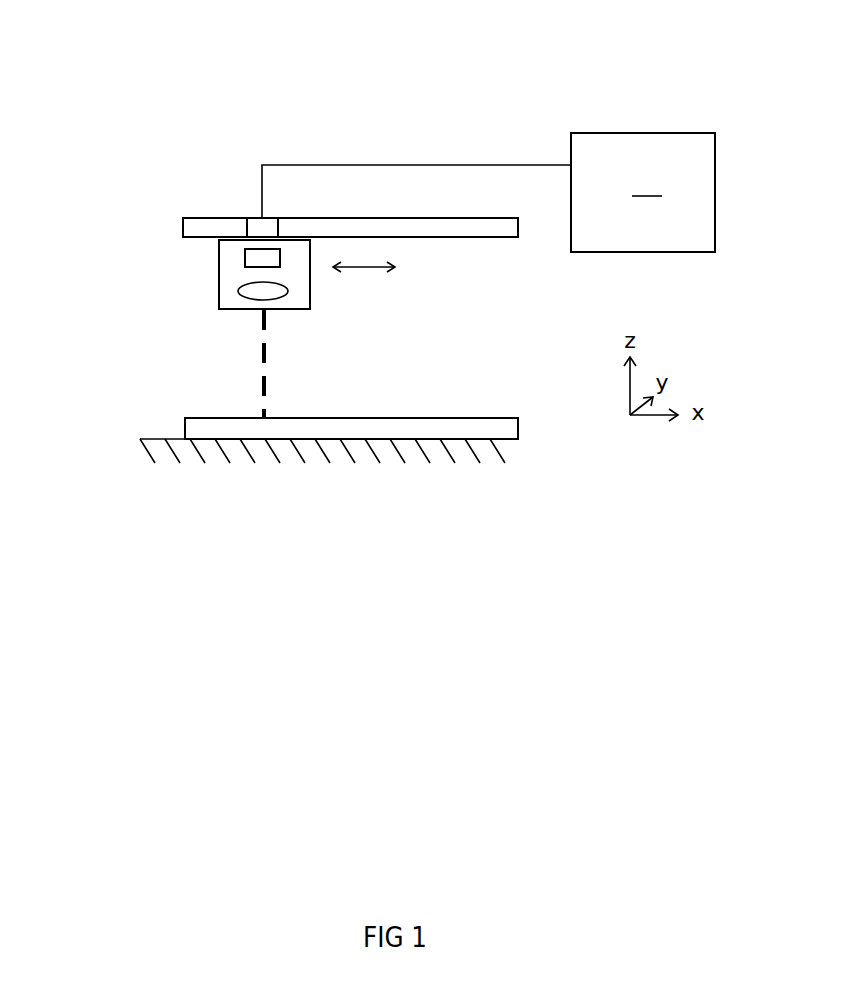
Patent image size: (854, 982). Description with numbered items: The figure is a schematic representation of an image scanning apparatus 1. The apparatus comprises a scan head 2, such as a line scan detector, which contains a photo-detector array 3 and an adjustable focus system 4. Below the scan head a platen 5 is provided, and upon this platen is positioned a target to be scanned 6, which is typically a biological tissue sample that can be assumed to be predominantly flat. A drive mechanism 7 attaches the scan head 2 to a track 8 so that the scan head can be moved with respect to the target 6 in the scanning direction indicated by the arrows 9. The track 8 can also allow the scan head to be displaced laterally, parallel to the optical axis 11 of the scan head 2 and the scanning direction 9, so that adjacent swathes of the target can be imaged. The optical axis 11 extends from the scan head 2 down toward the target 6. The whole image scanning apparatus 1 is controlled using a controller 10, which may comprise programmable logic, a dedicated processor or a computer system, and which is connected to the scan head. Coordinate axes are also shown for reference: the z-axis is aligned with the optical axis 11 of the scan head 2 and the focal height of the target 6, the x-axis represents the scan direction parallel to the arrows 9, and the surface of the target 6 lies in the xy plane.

The image scanning apparatus 1 is at (237, 97).
The scan head 2 is at (227, 274).
The photo-detector array 3 is at (258, 260).
The adjustable focus system 4 is at (258, 288).
The platen 5 is at (175, 463).
The target to be scanned 6 is at (468, 419).
The drive mechanism 7 is at (273, 219).
The track 8 is at (358, 217).
The arrows 9 is at (364, 281).
The controller 10 is at (643, 192).
The optical axis 11 is at (253, 390).